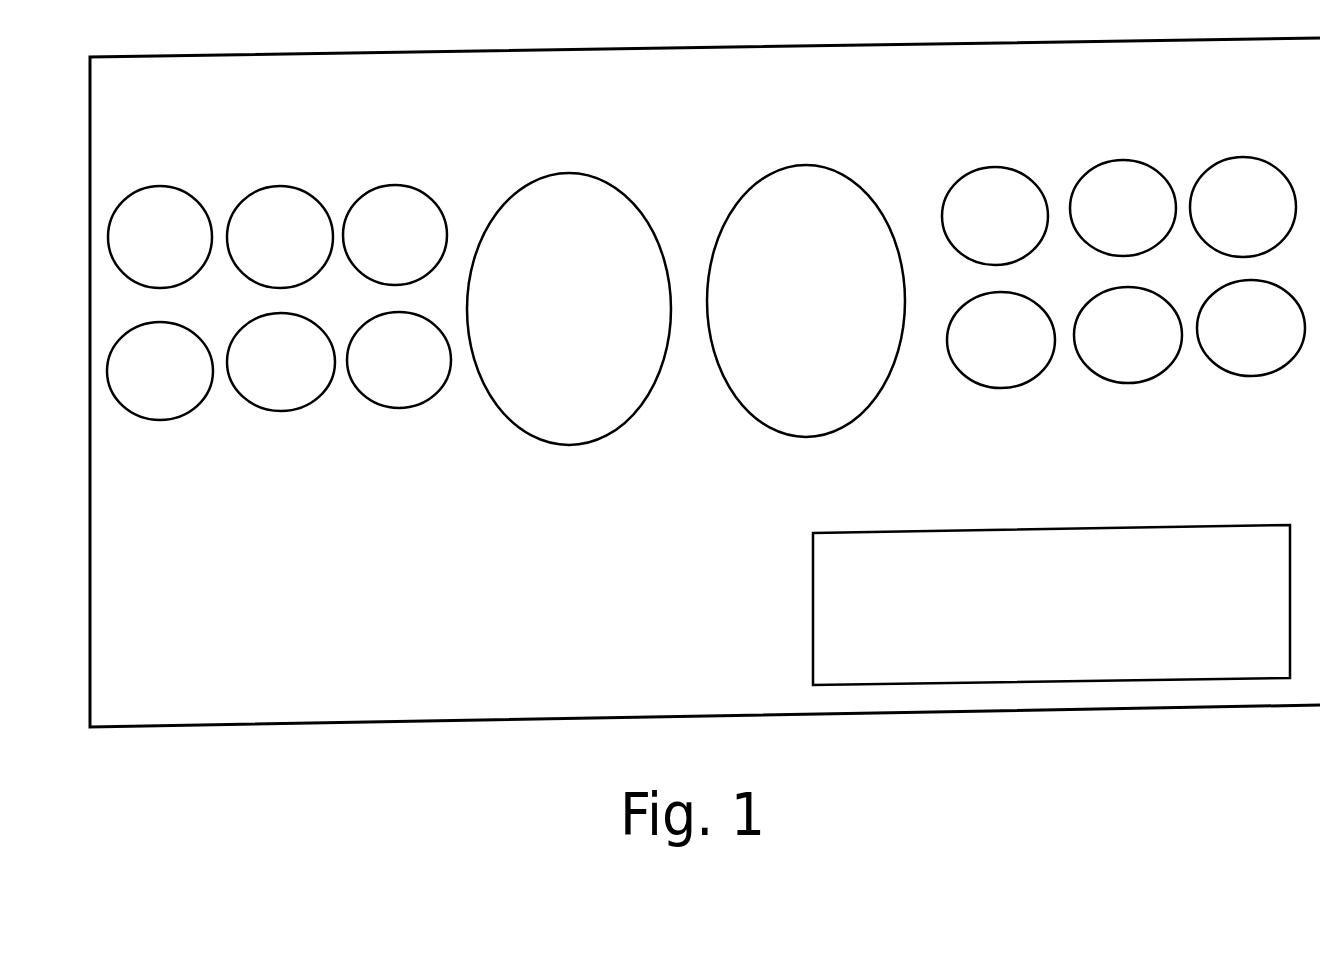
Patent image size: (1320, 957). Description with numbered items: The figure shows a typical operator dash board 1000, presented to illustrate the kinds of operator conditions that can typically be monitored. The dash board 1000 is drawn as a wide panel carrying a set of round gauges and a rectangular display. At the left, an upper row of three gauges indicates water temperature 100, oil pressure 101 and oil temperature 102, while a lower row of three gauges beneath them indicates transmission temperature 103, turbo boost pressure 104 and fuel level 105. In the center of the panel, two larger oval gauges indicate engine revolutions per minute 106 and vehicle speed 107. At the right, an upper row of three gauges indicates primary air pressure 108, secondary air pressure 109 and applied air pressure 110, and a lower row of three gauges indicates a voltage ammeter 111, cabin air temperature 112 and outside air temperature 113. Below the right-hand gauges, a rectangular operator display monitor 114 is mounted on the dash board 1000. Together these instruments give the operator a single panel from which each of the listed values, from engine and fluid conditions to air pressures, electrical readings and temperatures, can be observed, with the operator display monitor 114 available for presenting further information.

The water temperature 100 is at (158, 187).
The oil pressure 101 is at (280, 187).
The oil temperature 102 is at (393, 185).
The transmission temperature 103 is at (160, 420).
The turbo boost pressure 104 is at (278, 412).
The fuel level 105 is at (388, 408).
The engine revolutions per minute (RPM) 106 is at (568, 170).
The vehicle speed 107 is at (803, 163).
The primary air pressure 108 is at (995, 168).
The secondary air pressure 109 is at (1123, 160).
The applied air pressure 110 is at (1243, 158).
The voltage ammeter 111 is at (1003, 388).
The cabin air temperature 112 is at (1128, 385).
The outside air temperature 113 is at (1252, 377).
The operator display monitor 114 is at (813, 610).
The operator dash board 1000 is at (380, 720).